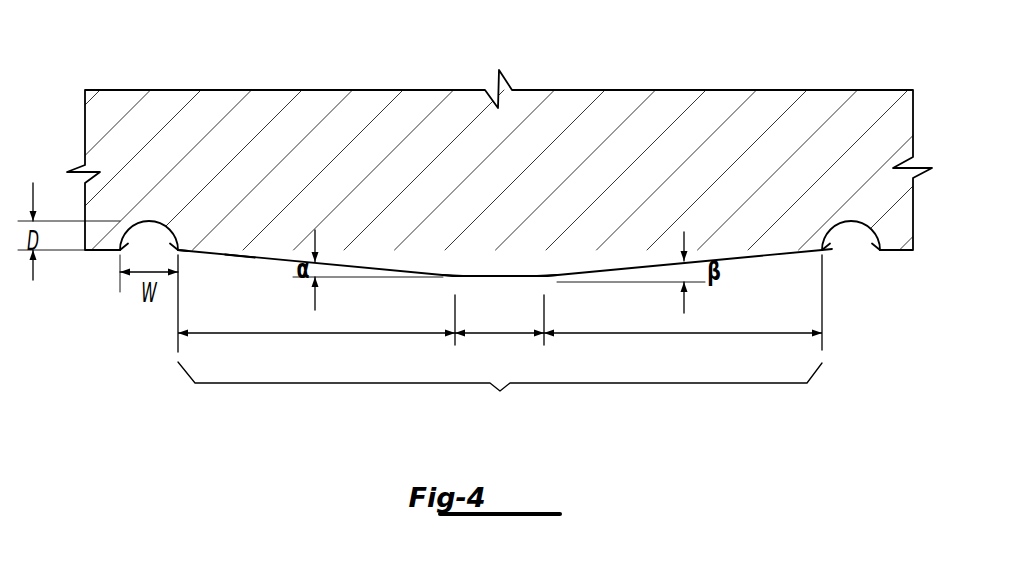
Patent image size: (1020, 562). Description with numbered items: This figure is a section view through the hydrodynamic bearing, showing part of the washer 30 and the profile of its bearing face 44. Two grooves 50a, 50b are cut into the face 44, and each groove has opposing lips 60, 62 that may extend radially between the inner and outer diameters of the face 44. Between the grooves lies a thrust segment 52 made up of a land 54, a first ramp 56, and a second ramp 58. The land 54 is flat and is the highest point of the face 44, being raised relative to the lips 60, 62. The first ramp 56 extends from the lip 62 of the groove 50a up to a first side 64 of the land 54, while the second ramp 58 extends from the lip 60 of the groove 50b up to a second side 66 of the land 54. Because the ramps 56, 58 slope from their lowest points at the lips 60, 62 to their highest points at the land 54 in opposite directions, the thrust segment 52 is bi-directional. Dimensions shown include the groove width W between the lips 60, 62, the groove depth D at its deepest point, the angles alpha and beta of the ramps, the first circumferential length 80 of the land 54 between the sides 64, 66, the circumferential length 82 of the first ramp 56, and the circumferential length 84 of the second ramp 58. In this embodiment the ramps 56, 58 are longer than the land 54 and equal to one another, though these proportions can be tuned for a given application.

The washer 30 is at (255, 105).
The face 44 is at (240, 255).
The groove 50a is at (148, 221).
The groove 50b is at (851, 222).
The thrust segment 52 is at (500, 394).
The land 54 is at (508, 276).
The first ramp 56 is at (268, 258).
The second ramp 58 is at (735, 256).
The first lip 60 is at (120, 250).
The second lip 62 is at (178, 248).
The first side 64 is at (453, 278).
The second side 66 is at (547, 278).
The first circumferential length 80 is at (498, 337).
The circumferential length 82 is at (272, 333).
The circumferential length 84 is at (740, 330).